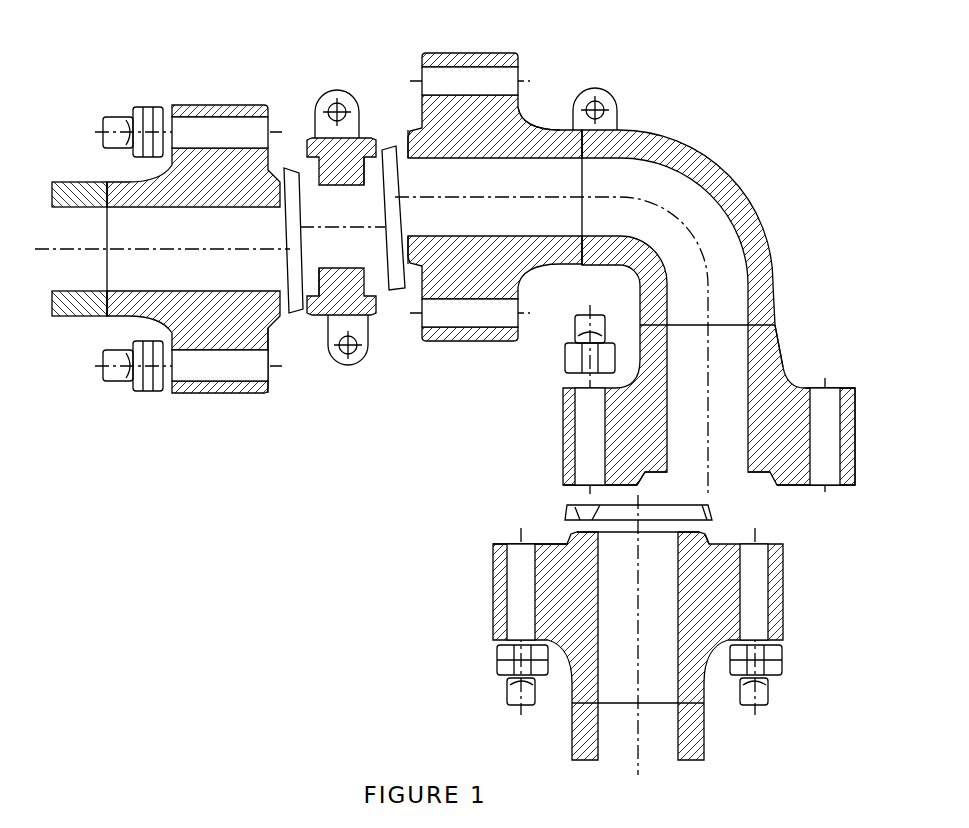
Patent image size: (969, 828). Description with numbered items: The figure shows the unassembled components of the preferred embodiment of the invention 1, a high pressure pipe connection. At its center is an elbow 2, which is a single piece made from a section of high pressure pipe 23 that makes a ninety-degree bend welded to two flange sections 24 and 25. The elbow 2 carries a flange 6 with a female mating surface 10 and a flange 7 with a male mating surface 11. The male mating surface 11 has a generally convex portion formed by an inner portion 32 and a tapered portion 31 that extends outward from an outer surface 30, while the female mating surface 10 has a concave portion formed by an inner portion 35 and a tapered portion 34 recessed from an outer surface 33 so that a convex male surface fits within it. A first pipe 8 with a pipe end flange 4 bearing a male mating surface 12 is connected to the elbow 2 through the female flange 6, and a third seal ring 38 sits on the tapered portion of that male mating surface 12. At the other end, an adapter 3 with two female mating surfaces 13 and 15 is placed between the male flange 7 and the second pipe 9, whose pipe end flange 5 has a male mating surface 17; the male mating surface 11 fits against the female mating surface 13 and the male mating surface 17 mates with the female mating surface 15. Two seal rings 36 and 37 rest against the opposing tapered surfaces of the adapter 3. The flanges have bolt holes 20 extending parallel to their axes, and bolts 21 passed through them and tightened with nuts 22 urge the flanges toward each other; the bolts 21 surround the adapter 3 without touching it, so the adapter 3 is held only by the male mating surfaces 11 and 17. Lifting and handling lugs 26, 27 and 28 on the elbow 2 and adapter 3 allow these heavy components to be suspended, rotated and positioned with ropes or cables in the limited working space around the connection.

The invention 1 is at (826, 137).
The elbow 2 is at (704, 166).
The adapter 3 is at (340, 80).
The pipe end flange 4 is at (789, 600).
The pipe end flange 5 is at (220, 103).
The flange 6 is at (857, 435).
The flange 7 is at (481, 51).
The first pipe 8 is at (707, 727).
The second pipe 9 is at (82, 317).
The female mating surface 10 is at (764, 479).
The male mating surface 11 is at (415, 130).
The male mating surface 12 is at (731, 541).
The female mating surface 13 is at (362, 181).
The female mating surface 15 is at (323, 268).
The male mating surface 17 is at (270, 338).
The bolt holes 20 is at (205, 148).
The bolts 21 is at (576, 329).
The nuts 22 is at (497, 667).
The high pressure pipe 23 is at (773, 288).
The flange section 24 is at (783, 367).
The flange section 25 is at (545, 130).
The lifting and handling lug 26 is at (613, 95).
The lifting and handling lug 27 is at (326, 90).
The lifting and handling lug 28 is at (363, 357).
The outer surface 30 is at (568, 532).
The tapered portion 31 is at (573, 533).
The inner portion 32 is at (600, 503).
The outer surface 33 is at (595, 485).
The tapered portion 34 is at (636, 481).
The inner portion 35 is at (641, 474).
The seal ring 36 is at (297, 312).
The seal ring 37 is at (388, 144).
The third seal ring 38 is at (712, 517).